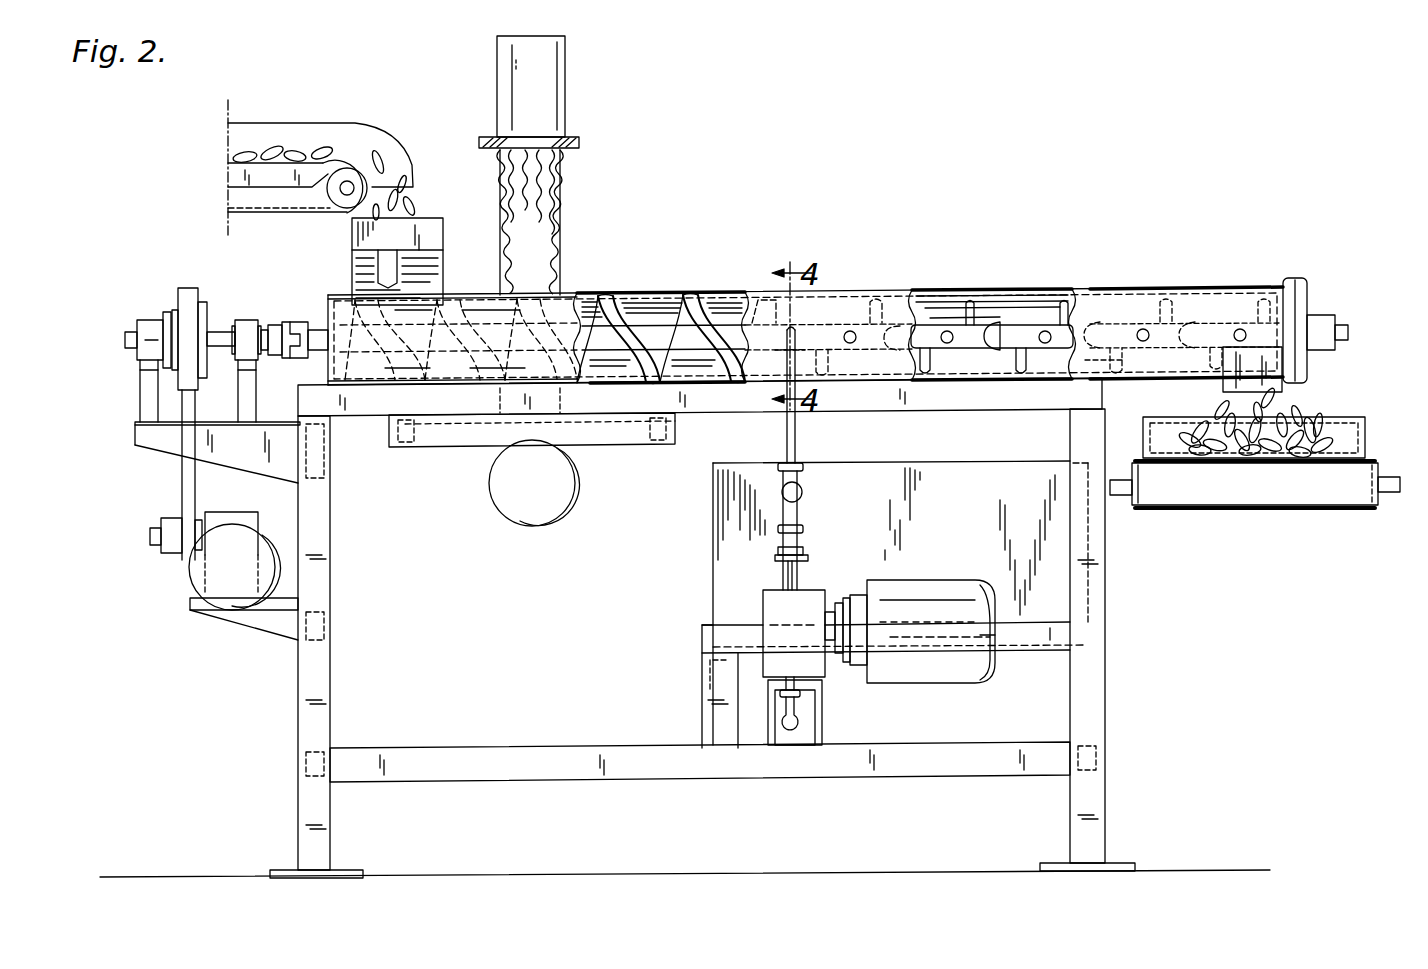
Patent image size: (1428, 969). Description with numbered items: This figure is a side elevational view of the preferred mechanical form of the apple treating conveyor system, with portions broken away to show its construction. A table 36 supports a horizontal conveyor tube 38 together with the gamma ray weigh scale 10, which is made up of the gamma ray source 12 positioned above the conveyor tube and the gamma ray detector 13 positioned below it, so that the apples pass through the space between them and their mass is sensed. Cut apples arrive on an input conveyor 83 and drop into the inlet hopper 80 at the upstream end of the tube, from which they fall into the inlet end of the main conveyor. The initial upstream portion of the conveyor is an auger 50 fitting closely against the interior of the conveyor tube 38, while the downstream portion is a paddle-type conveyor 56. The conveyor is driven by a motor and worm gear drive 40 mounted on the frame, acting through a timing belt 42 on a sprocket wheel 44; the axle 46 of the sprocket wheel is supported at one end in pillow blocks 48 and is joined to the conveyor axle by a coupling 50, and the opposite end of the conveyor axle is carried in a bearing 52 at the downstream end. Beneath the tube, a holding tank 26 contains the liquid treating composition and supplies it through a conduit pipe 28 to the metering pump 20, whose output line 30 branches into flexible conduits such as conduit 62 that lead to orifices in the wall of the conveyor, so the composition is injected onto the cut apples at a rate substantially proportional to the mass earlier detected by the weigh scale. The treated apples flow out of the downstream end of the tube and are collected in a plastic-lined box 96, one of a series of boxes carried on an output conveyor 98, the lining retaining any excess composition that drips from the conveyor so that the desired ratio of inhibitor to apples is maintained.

The gamma ray weigh scale 10 is at (578, 68).
The gamma ray source 12 is at (510, 82).
The gamma ray detector 13 is at (552, 520).
The metering pump 20 is at (818, 660).
The holding tank 26 is at (935, 475).
The conduit pipe 28 is at (786, 728).
The output line 30 is at (800, 518).
The table 36 is at (298, 680).
The conveyor tube 38 is at (1188, 266).
The motor and worm gear drive 40 is at (190, 568).
The timing belt 42 is at (182, 490).
The sprocket wheel 44 is at (178, 292).
The axle 46 is at (215, 332).
The pillow blocks 48 is at (137, 325).
The auger 50 is at (292, 352).
The bearing 52 is at (1308, 302).
The paddle-type conveyor 56 is at (985, 300).
The flexible conduit 62 is at (785, 420).
The inlet hopper 80 is at (443, 232).
The input conveyor 83 is at (262, 160).
The plastic-lined box 96 is at (1365, 422).
The output conveyor 98 is at (1378, 468).